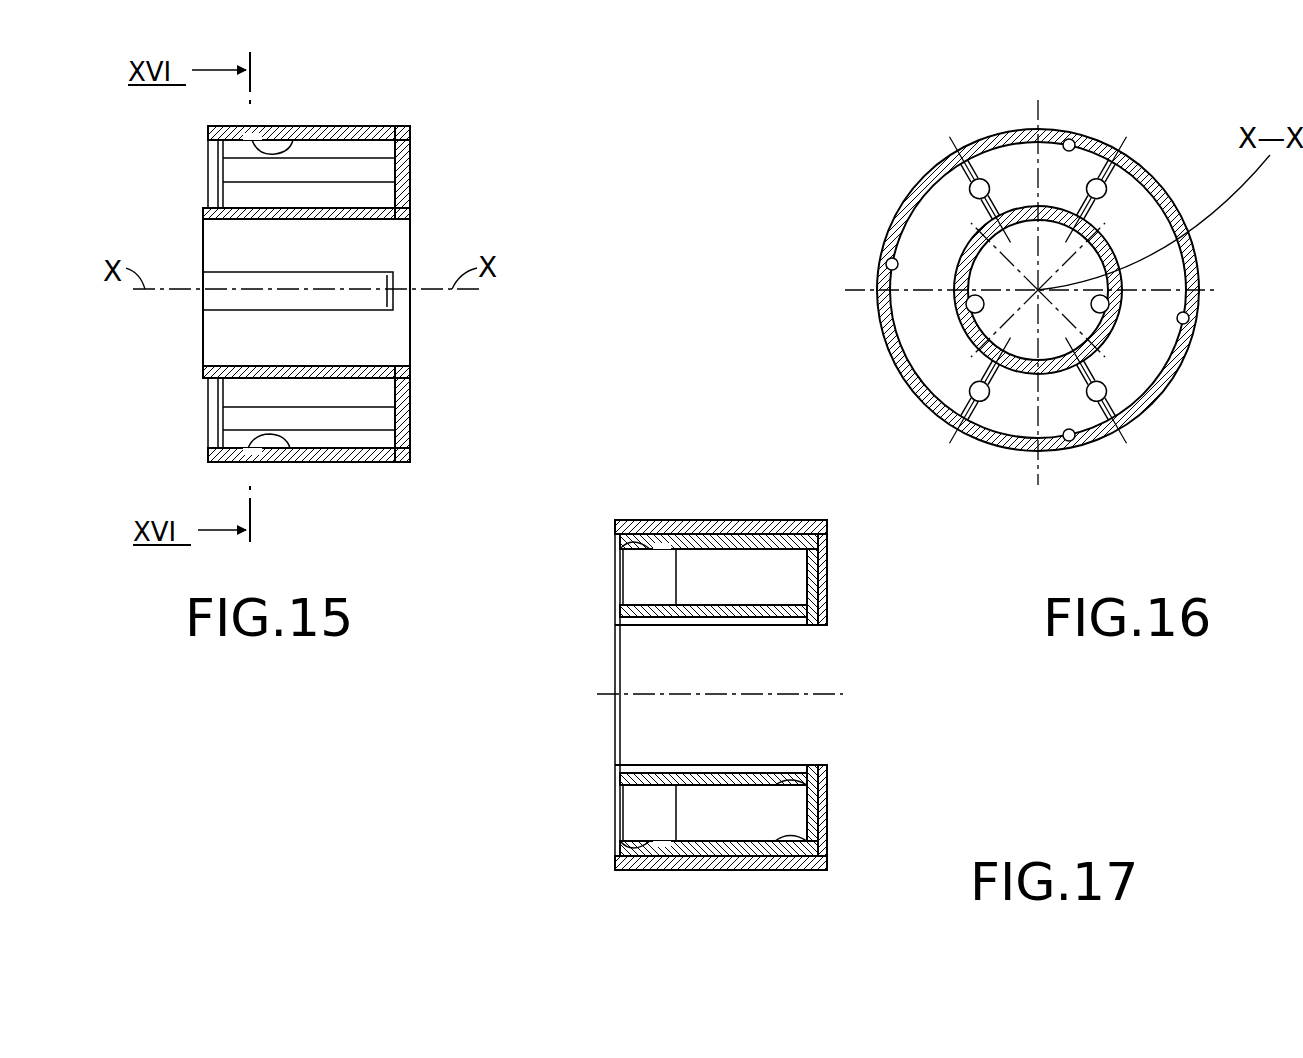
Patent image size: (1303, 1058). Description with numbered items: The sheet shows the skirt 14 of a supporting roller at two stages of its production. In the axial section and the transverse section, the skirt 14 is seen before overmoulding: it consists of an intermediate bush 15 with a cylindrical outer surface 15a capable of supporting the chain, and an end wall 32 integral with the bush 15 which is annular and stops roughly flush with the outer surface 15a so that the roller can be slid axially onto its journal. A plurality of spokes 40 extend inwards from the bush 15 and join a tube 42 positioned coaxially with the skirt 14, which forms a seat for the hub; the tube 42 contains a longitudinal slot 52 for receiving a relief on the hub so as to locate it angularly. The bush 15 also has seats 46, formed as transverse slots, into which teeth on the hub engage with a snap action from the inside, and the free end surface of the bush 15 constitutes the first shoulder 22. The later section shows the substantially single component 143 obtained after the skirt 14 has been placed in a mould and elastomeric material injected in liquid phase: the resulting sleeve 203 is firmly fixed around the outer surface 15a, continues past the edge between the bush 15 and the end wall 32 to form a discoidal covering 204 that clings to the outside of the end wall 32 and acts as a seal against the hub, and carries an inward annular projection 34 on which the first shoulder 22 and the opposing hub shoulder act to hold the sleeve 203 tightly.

In FIG. 15, the skirt 14 is at (462, 122).
In FIG. 16, the skirt 14 is at (852, 112).
In FIG. 17, the skirt 14 is at (820, 830).
In FIG. 17, the intermediate bush 15 is at (773, 547).
In FIG. 15, the cylindrical outer surface 15a is at (370, 127).
In FIG. 15, the first shoulder 22 is at (207, 132).
In FIG. 17, the first shoulder 22 is at (650, 520).
In FIG. 15, the end wall 32 is at (410, 185).
In FIG. 17, the inward annular projection 34 is at (612, 535).
In FIG. 16, the spokes 40 is at (1110, 185).
In FIG. 15, the tube 42 is at (267, 213).
In FIG. 16, the tube 42 is at (940, 412).
In FIG. 17, the tube 42 is at (810, 796).
In FIG. 15, the seat 46 is at (300, 128).
In FIG. 16, the seat 46 is at (1087, 140).
In FIG. 15, the longitudinal slot 52 is at (215, 299).
In FIG. 16, the longitudinal slot 52 is at (953, 338).
In FIG. 17, the longitudinal slot 52 is at (735, 620).
In FIG. 17, the single component 143 is at (572, 672).
In FIG. 17, the sleeve 203 is at (725, 520).
In FIG. 17, the discoidal covering 204 is at (827, 605).